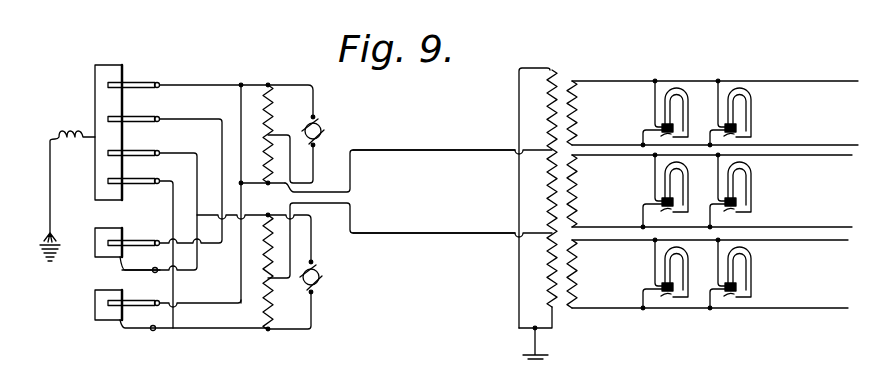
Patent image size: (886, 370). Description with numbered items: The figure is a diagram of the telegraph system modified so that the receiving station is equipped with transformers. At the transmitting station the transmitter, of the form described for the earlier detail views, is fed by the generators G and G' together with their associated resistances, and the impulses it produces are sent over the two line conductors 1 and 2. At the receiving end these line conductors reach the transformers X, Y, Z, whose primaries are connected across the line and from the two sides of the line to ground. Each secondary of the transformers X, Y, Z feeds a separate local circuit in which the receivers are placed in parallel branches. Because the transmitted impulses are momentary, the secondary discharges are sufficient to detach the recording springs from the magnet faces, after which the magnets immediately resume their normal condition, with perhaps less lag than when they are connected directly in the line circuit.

The primary tap line 1 is at (434, 142).
The primary tap line 2 is at (434, 227).
The generator G is at (295, 116).
The second generator G' is at (325, 277).
The transformer X is at (712, 113).
The transformer Y is at (709, 191).
The transformer Z is at (707, 274).